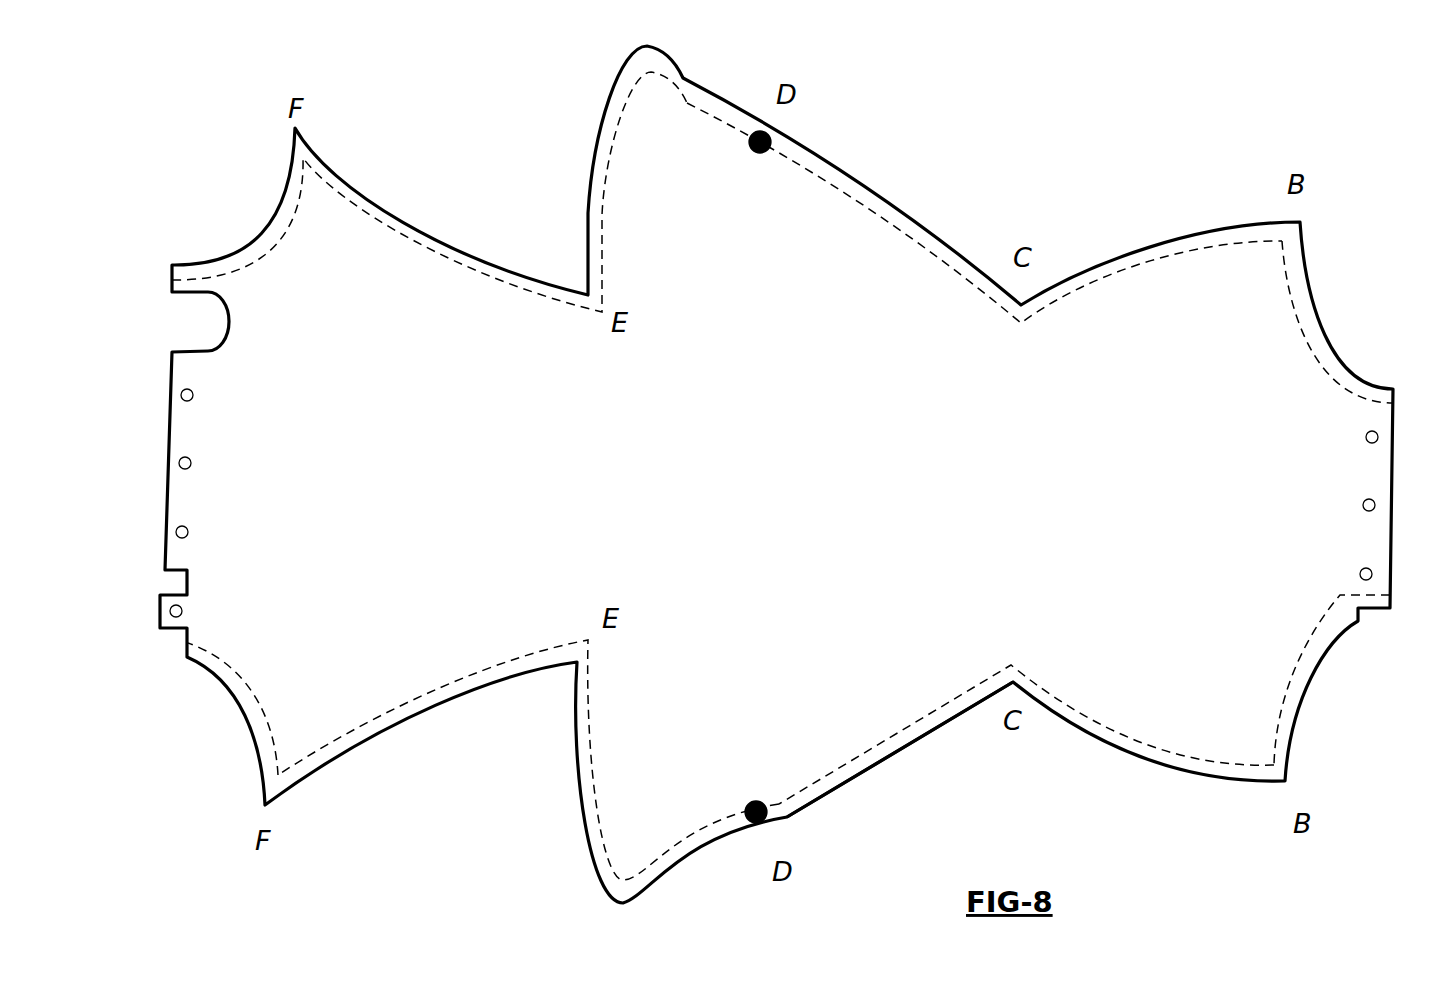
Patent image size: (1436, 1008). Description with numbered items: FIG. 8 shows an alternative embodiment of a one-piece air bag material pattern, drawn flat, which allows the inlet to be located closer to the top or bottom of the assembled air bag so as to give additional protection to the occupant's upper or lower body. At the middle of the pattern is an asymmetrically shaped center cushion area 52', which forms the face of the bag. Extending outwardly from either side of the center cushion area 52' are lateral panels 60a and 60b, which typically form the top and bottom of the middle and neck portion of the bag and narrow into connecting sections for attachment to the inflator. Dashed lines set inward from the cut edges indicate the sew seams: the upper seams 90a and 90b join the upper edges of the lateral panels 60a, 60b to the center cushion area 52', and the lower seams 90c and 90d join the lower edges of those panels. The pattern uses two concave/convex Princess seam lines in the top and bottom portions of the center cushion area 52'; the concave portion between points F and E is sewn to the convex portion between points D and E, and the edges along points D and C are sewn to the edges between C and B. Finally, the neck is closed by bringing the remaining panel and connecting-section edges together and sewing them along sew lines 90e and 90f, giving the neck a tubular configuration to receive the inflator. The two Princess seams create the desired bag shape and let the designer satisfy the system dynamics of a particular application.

The center cushion area 52' is at (900, 749).
The lateral panel 60a is at (277, 503).
The lateral panel 60b is at (1281, 505).
The sew seam 90a is at (242, 267).
The sew seam 90b is at (805, 168).
The sew seam 90c is at (385, 707).
The sew seam 90d is at (813, 790).
The sew line 90e is at (1297, 312).
The sew line 90f is at (1291, 679).